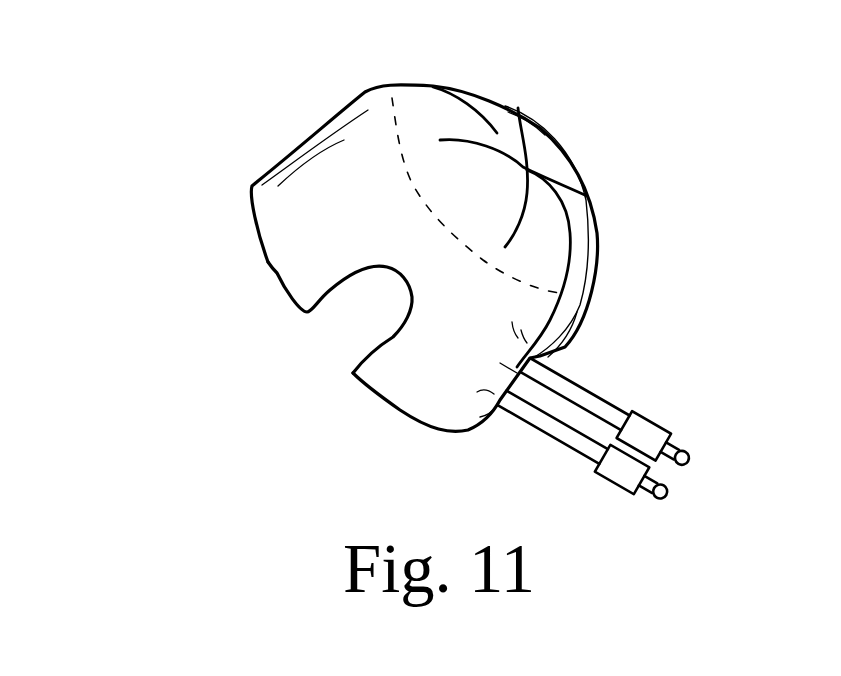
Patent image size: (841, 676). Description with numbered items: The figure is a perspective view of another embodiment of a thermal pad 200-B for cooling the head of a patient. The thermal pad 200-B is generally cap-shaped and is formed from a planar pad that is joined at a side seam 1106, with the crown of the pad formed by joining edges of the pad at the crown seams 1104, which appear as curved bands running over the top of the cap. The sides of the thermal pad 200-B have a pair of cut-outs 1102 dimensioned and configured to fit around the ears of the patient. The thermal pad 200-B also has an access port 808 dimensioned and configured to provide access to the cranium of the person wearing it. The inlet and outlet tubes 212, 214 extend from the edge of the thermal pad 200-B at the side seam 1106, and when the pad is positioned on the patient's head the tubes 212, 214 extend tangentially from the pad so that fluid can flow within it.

The thermal pad 200-B is at (195, 86).
The access port 808 is at (482, 108).
The crown seams 1104 is at (523, 142).
The side seam 1106 is at (585, 278).
The cut-outs 1102 is at (390, 337).
The inlet tube 212 is at (560, 440).
The outlet tube 214 is at (604, 401).